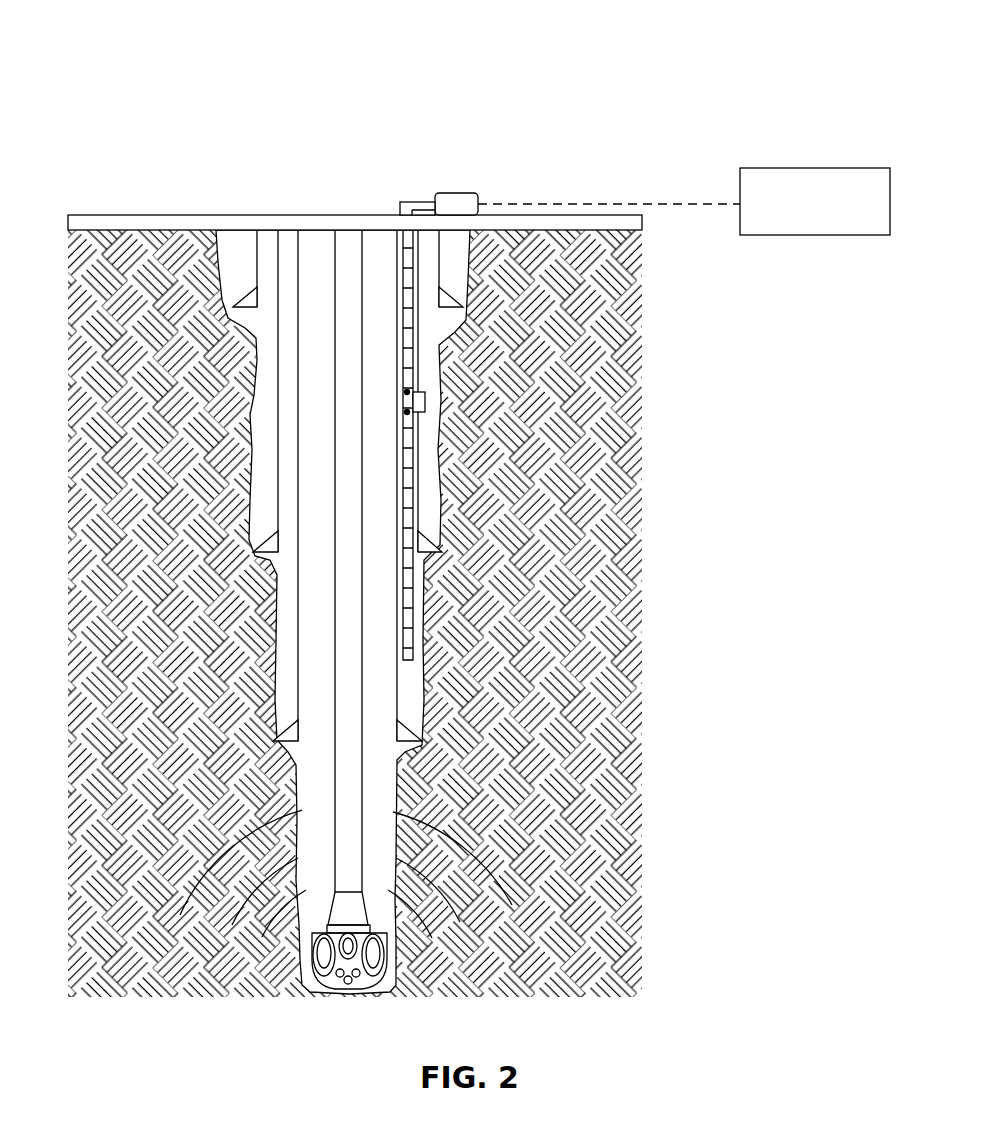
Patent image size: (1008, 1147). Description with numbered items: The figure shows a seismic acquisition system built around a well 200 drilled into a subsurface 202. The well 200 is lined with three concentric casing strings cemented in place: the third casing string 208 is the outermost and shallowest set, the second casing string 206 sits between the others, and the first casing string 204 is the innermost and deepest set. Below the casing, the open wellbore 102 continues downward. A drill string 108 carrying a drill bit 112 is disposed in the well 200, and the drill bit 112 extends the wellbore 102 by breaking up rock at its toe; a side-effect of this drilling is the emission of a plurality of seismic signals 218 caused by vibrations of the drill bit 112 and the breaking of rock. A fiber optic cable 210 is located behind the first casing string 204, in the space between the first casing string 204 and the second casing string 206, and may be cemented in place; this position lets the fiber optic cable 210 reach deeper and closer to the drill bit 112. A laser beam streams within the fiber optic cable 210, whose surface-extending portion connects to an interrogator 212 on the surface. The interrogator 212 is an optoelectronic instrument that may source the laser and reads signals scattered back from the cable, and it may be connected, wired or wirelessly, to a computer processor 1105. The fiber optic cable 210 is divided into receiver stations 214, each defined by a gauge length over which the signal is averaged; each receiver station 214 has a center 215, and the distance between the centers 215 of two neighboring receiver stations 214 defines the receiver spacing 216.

The well 200 is at (115, 66).
The subsurface 202 is at (518, 919).
The wellbore 102 is at (300, 810).
The seismic signals 218 is at (506, 838).
The third casing string 208 is at (257, 278).
The second casing string 206 is at (278, 453).
The first casing string 204 is at (298, 662).
The drill string 108 is at (363, 718).
The drill bit 112 is at (387, 949).
The fiber optic cable 210 is at (458, 445).
The receiver station 214 is at (458, 445).
The center 215 is at (413, 372).
The receiver spacing 216 is at (425, 402).
The interrogator 212 is at (452, 193).
The computer processor 1105 is at (843, 216).